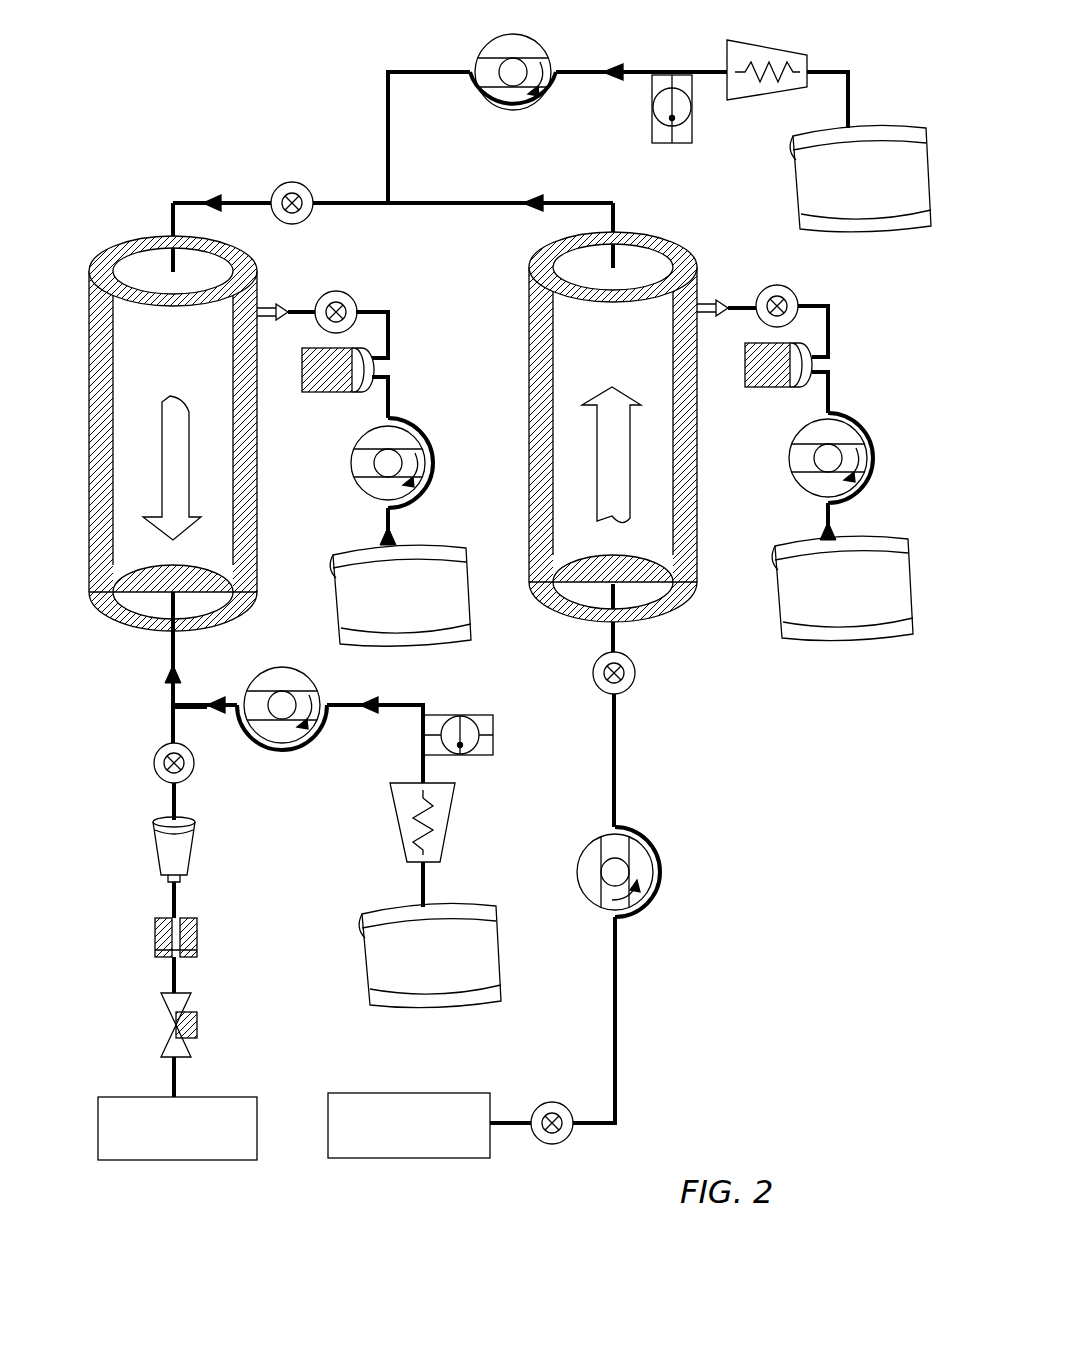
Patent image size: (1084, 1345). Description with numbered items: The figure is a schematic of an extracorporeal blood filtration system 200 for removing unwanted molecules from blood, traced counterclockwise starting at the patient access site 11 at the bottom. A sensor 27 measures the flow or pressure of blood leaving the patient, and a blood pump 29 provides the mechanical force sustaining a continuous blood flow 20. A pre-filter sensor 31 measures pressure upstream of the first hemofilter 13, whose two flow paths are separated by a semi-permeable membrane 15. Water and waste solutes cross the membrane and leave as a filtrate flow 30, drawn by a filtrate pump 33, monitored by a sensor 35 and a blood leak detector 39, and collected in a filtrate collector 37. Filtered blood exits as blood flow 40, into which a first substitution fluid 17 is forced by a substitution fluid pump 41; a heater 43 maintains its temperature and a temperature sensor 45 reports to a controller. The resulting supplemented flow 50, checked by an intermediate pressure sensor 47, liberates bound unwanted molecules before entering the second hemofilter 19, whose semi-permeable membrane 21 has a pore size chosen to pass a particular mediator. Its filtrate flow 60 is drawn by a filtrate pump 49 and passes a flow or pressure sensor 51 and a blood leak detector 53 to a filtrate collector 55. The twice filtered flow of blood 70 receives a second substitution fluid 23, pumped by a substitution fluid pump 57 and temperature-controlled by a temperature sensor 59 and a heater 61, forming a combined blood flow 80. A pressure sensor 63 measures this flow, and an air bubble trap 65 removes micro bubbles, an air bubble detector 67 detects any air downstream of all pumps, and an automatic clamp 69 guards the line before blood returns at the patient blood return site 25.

The system 200 is at (205, 72).
The substitution fluid pump 41 is at (481, 44).
The heater 43 is at (775, 46).
The temperature sensor 45 is at (651, 120).
The first substitution fluid 17 is at (790, 145).
The blood flow 40 is at (440, 201).
The supplemented flow 50 is at (332, 201).
The intermediate pressure sensor 47 is at (279, 188).
The second hemofilter 19 is at (173, 412).
The semi-permeable membrane 21 is at (113, 325).
The first hemofilter 13 is at (618, 411).
The semi-permeable membrane 15 is at (553, 322).
The filtrate flow 60 is at (282, 304).
The flow or pressure sensor 51 is at (352, 294).
The blood leak detector 53 is at (345, 394).
The filtrate pump 49 is at (418, 428).
The filtrate collector 55 is at (440, 548).
The filtrate flow 30 is at (724, 300).
The sensor 35 is at (794, 290).
The blood leak detector 39 is at (782, 390).
The filtrate pump 33 is at (858, 424).
The filtrate collector 37 is at (780, 543).
The twice filtered flow of blood 70 is at (168, 642).
The combined blood flow 80 is at (170, 707).
The substitution fluid pump 57 is at (262, 668).
The pressure sensor 63 is at (153, 762).
The air bubble trap 65 is at (197, 838).
The air bubble detector 67 is at (154, 928).
The automatic clamp 69 is at (165, 1013).
The patient blood return site 25 is at (212, 1096).
The temperature sensor 59 is at (494, 728).
The heater 61 is at (455, 796).
The second substitution fluid 23 is at (362, 922).
The pre-filter sensor 31 is at (636, 670).
The blood pump 29 is at (582, 856).
The blood flow 20 is at (618, 1012).
The sensor 27 is at (555, 1102).
The patient access site 11 is at (445, 1092).